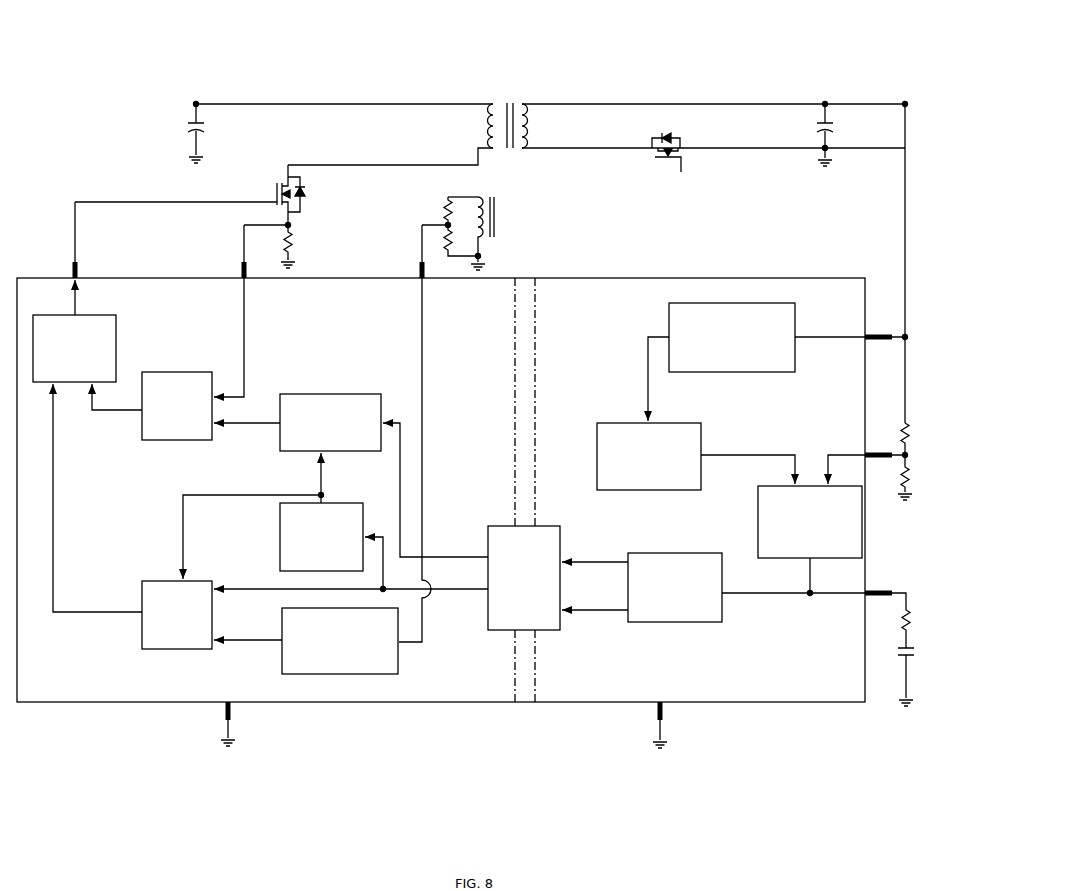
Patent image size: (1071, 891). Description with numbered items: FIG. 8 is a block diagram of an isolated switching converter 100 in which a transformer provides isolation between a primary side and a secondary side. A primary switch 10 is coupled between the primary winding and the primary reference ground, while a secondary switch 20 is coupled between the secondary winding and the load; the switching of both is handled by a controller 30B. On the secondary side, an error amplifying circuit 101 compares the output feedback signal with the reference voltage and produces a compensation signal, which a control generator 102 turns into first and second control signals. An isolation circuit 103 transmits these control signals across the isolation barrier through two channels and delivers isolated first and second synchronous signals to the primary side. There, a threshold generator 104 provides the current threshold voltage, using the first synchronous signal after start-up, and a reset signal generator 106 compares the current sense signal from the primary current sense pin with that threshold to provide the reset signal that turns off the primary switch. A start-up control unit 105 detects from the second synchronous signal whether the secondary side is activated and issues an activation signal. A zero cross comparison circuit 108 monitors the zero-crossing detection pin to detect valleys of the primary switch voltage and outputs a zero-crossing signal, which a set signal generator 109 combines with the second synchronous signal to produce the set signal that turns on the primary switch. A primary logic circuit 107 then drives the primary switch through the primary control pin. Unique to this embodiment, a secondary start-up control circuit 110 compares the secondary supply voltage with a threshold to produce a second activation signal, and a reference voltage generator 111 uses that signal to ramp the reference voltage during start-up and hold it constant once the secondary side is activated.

The isolated switching converter 100 is at (613, 58).
The primary switch 10 is at (267, 180).
The secondary switch 20 is at (652, 160).
The controller 30B is at (652, 276).
The error amplifying circuit 101 is at (757, 512).
The control generator 102 is at (630, 637).
The isolation circuit 103 is at (495, 632).
The threshold generator 104 is at (279, 441).
The start-up control unit 105 is at (278, 550).
The reset signal generator 106 is at (140, 440).
The primary logic circuit 107 is at (117, 360).
The zero cross comparison circuit 108 is at (280, 674).
The set signal generator 109 is at (160, 668).
The secondary start-up control circuit 110 is at (770, 377).
The reference voltage generator 111 is at (597, 480).